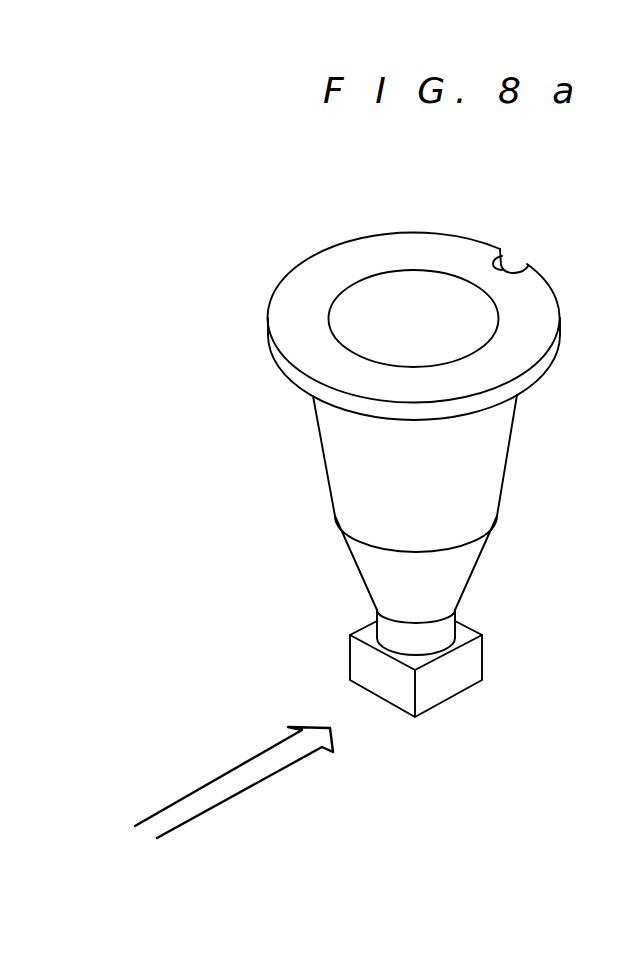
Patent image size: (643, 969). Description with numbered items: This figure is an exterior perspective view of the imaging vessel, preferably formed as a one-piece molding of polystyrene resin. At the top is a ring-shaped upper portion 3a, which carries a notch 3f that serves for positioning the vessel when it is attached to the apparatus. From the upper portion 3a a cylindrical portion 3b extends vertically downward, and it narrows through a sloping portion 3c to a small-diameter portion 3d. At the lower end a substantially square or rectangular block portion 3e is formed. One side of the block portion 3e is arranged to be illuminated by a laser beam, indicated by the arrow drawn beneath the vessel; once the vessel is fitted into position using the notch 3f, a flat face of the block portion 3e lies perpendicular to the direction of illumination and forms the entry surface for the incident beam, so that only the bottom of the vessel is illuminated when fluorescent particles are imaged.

The ring-shaped upper portion 3a is at (395, 242).
The cylindrical portion 3b is at (477, 473).
The sloping portion 3c is at (443, 582).
The small-diameter portion 3d is at (430, 638).
The block portion 3e is at (445, 678).
The notch 3f is at (518, 270).